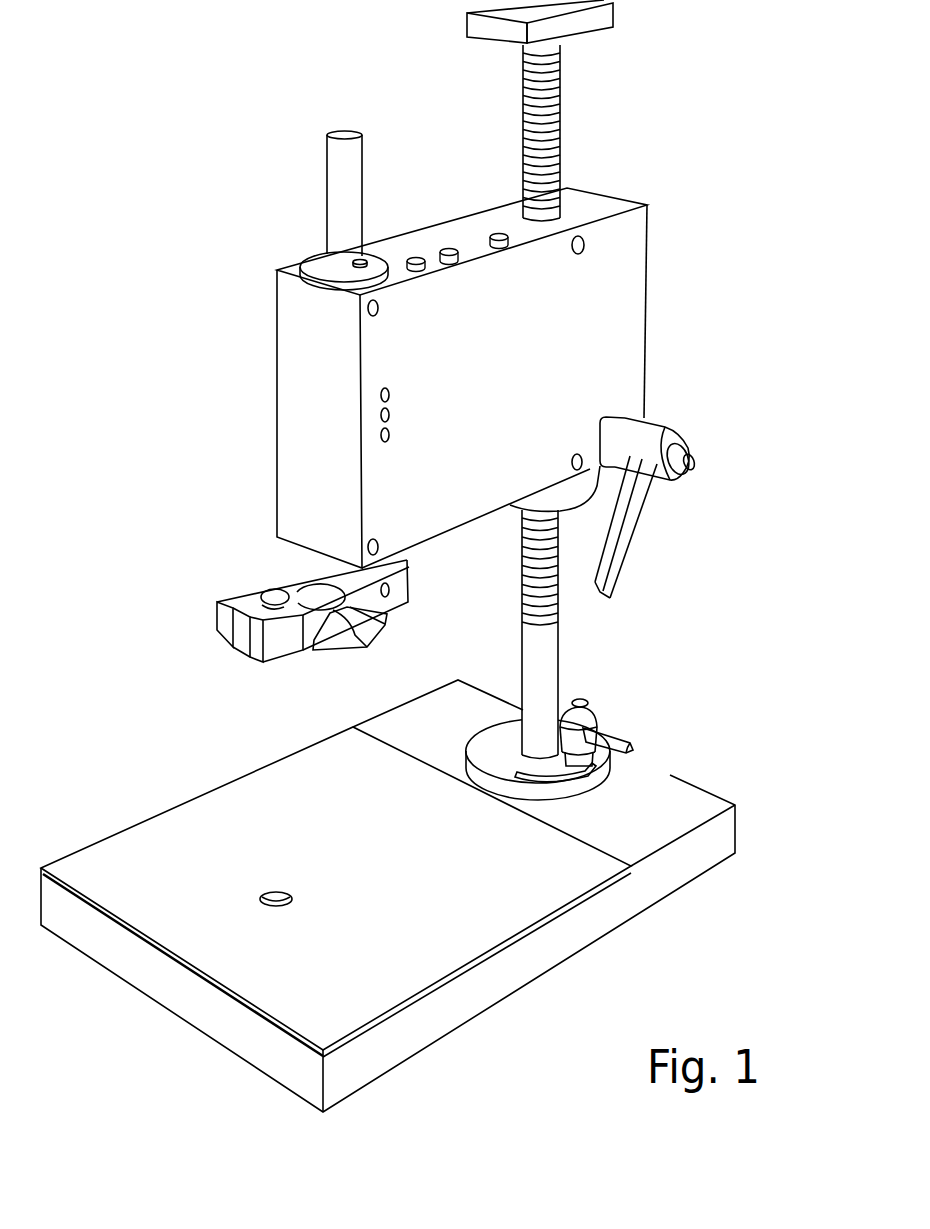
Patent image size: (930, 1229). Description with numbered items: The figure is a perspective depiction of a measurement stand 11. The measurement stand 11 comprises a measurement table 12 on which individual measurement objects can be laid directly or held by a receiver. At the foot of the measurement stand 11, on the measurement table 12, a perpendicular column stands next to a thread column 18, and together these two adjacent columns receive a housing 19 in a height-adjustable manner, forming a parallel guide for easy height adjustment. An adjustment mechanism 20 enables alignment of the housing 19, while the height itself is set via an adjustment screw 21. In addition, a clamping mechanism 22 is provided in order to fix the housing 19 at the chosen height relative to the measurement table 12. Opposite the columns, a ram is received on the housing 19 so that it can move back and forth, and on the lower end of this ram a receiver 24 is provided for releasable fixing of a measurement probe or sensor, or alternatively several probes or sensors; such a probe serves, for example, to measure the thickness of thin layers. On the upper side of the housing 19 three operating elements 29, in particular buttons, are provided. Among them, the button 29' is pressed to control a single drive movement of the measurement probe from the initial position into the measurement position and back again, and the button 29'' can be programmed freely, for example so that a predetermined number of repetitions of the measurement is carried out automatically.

The measurement stand 11 is at (708, 630).
The measurement table 12 is at (410, 967).
The thread column 18 is at (545, 660).
The housing 19 is at (658, 319).
The adjustment mechanism 20 is at (630, 719).
The adjustment screw 21 is at (578, 490).
The clamping mechanism 22 is at (656, 533).
The receiver 24 is at (190, 654).
The operating elements 29 is at (487, 173).
The button 29' is at (397, 203).
The button 29'' is at (435, 190).